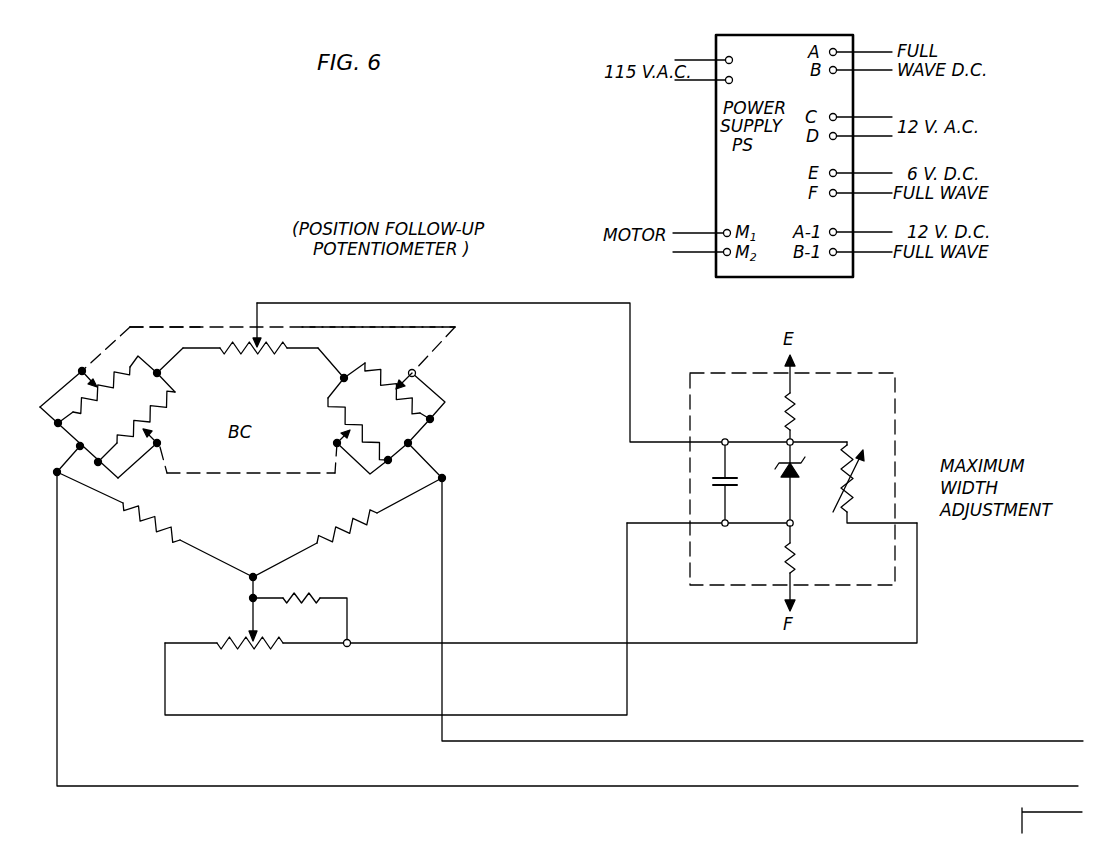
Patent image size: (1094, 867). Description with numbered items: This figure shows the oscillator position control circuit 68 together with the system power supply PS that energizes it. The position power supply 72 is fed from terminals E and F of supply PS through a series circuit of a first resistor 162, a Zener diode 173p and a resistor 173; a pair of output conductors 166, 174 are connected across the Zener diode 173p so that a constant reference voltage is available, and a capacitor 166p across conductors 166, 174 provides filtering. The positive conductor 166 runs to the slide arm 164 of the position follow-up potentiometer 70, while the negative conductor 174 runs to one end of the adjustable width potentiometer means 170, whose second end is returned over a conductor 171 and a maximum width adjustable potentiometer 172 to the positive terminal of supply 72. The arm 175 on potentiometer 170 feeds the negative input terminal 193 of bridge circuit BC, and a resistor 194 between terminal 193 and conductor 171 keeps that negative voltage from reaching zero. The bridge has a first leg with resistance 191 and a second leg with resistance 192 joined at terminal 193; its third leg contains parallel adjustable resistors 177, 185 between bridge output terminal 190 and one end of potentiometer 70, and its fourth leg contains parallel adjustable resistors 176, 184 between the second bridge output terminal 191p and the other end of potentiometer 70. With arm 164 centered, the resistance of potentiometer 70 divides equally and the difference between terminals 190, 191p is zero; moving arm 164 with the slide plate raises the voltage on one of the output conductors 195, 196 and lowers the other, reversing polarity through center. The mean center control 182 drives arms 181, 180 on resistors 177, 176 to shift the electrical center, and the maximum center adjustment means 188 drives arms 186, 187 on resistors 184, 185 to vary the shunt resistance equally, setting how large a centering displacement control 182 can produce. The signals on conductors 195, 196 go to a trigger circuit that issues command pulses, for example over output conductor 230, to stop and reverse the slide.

The oscillator position control circuit 68 is at (62, 350).
The position follow-up potentiometer 70 is at (221, 336).
The position power supply 72 is at (900, 409).
The first resistor 162 is at (792, 415).
The slide arm 164 is at (254, 324).
The output conductor 166 is at (672, 424).
The capacitor 166p is at (709, 478).
The adjustable width potentiometer means 170 is at (220, 652).
The conductor 171 is at (912, 578).
The maximum width adjustable potentiometer 172 is at (852, 488).
The resistor 173 is at (795, 562).
The Zener diode 173p is at (787, 478).
The output conductor 174 is at (664, 503).
The arm 175 is at (248, 622).
The adjustable resistor 176 is at (342, 415).
The adjustable resistor 177 is at (143, 420).
The adjustable arm 180 is at (337, 438).
The adjustable arm 181 is at (152, 437).
The mean center control 182 is at (173, 487).
The adjustable resistor 184 is at (392, 377).
The adjustable resistor 185 is at (97, 400).
The adjustable arm 186 is at (421, 379).
The adjustable arm 187 is at (82, 388).
The maximum center adjustment means 188 is at (143, 323).
The bridge output terminal 190 is at (56, 472).
The resistance 191 is at (347, 531).
The second bridge output terminal 191p is at (446, 478).
The resistance 192 is at (158, 537).
The negative input terminal 193 is at (258, 580).
The resistor 194 is at (314, 596).
The output conductor 195 is at (1042, 723).
The conductor 196 is at (57, 625).
The output conductor 230 is at (1020, 824).